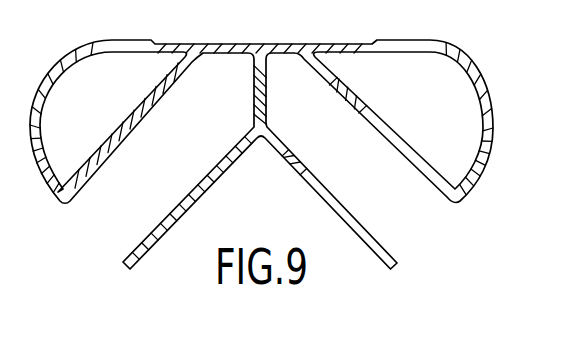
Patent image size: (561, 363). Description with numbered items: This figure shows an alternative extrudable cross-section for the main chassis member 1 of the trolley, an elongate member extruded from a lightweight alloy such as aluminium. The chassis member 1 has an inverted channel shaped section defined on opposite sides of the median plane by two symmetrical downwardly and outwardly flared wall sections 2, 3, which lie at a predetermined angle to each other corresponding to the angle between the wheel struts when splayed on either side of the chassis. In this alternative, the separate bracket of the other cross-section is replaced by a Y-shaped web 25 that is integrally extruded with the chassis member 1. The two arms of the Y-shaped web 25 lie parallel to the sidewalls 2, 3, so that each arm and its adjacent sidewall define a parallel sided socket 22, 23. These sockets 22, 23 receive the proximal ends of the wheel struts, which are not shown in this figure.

The chassis member 1 is at (242, 44).
The wall section 2 is at (106, 144).
The wall section 3 is at (398, 133).
The parallel sided socket 22 is at (171, 172).
The parallel sided socket 23 is at (367, 172).
The Y-shaped web 25 is at (266, 94).